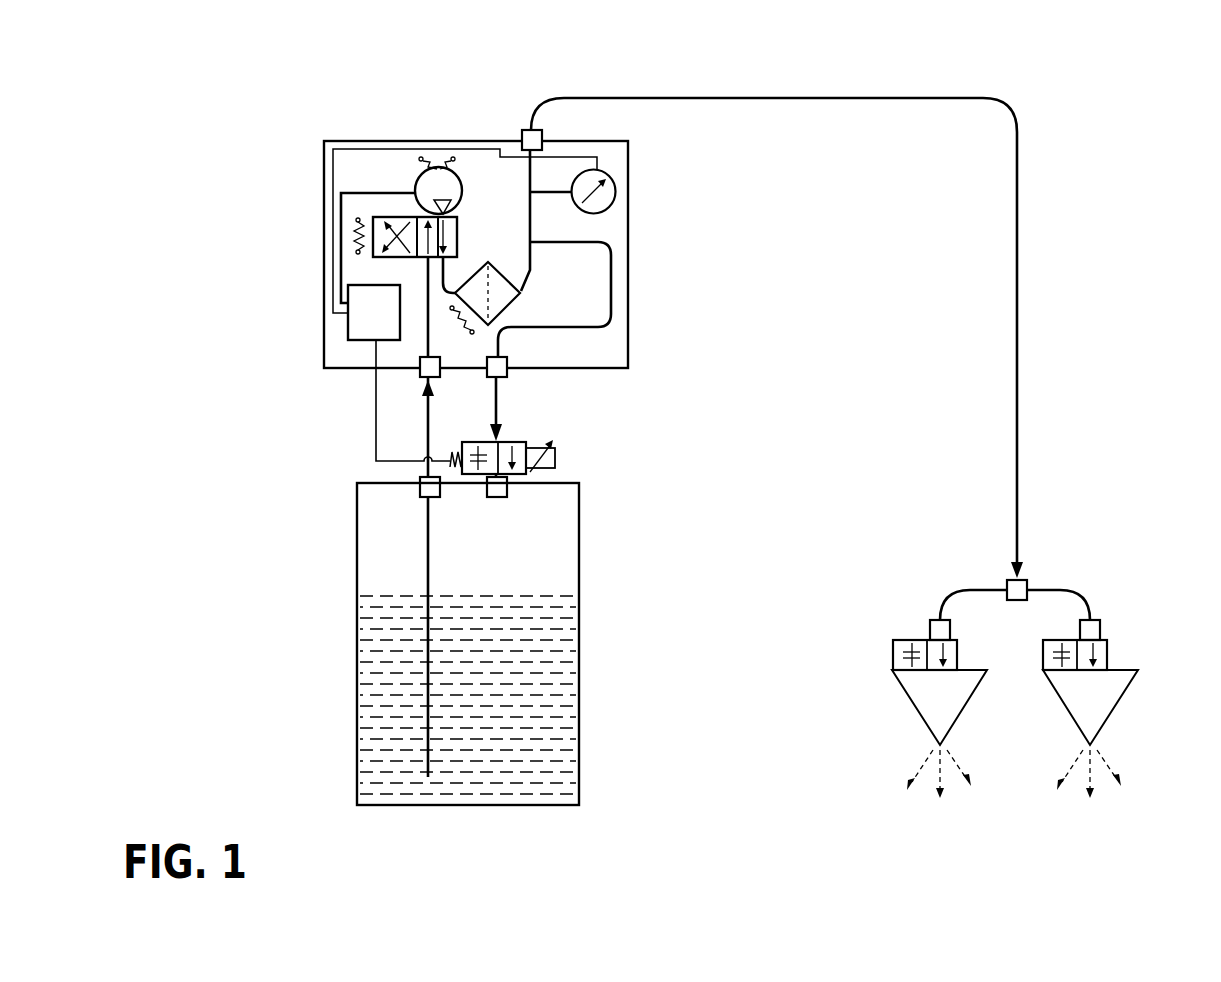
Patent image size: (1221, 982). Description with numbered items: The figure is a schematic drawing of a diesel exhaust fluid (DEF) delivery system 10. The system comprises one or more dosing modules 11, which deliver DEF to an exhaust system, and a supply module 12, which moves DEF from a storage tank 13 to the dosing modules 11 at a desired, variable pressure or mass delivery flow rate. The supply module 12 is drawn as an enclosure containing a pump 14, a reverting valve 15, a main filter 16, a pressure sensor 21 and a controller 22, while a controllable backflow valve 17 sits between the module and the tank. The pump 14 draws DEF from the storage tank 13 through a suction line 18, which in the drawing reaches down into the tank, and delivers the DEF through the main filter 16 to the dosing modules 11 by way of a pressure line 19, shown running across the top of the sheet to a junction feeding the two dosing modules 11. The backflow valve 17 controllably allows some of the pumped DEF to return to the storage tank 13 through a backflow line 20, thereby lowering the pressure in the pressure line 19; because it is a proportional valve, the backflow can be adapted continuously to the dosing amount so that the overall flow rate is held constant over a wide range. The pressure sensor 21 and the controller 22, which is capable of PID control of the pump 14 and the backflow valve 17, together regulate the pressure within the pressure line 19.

The DEF delivery system 10 is at (188, 140).
The dosing module 11 is at (893, 670).
The supply module 12 is at (324, 141).
The storage tank 13 is at (357, 535).
The pump 14 is at (415, 186).
The reverting valve 15 is at (386, 258).
The main filter 16 is at (512, 310).
The controllable backflow valve 17 is at (556, 458).
The suction line 18 is at (428, 412).
The pressure line 19 is at (702, 97).
The backflow line 20 is at (497, 402).
The pressure sensor 21 is at (615, 204).
The controller 22 is at (333, 330).